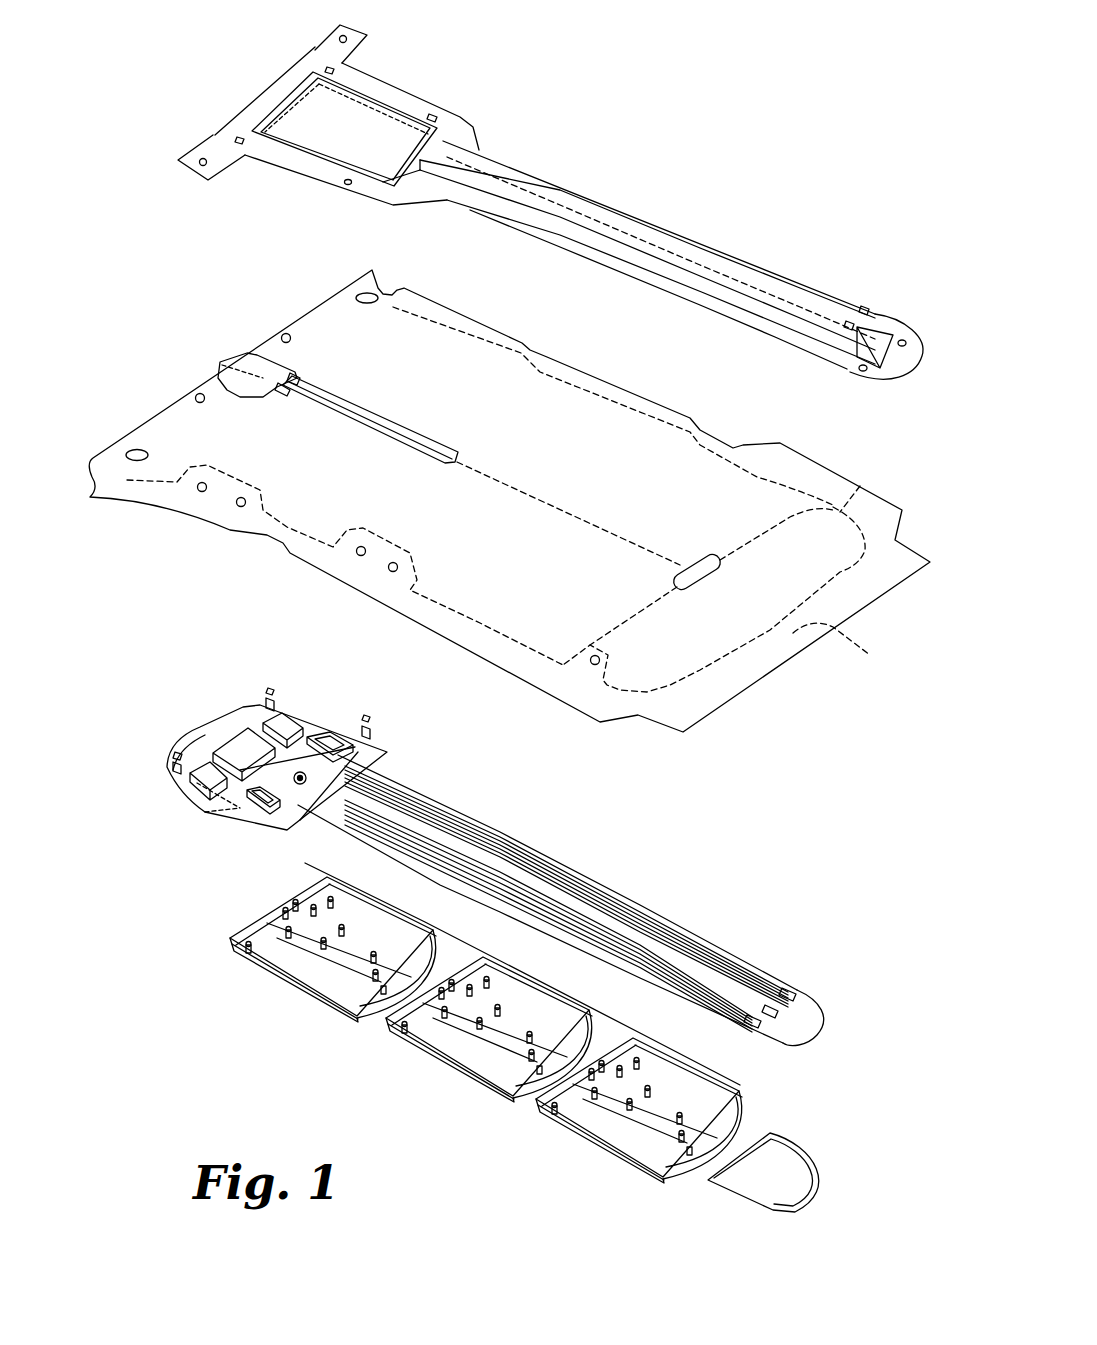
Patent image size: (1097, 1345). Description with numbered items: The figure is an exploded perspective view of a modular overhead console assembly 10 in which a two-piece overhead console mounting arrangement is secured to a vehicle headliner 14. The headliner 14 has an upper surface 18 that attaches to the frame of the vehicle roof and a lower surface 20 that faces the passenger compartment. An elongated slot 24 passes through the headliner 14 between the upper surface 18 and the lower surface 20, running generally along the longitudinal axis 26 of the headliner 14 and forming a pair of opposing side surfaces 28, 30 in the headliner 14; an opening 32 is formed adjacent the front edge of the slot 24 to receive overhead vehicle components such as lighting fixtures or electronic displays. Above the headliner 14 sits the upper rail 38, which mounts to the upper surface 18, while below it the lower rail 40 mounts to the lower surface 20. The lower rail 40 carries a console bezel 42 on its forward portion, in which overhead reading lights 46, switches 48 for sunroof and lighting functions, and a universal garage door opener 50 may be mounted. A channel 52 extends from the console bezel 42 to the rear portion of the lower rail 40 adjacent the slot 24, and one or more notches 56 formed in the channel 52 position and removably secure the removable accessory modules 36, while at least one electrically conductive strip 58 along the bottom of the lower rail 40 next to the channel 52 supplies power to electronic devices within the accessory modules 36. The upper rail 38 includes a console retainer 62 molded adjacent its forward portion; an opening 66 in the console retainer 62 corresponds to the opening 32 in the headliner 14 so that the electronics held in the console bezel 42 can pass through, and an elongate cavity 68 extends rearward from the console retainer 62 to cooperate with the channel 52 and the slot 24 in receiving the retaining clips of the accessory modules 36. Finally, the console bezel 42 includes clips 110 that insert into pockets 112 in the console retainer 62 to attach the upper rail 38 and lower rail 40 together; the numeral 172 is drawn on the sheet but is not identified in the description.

The modular overhead console assembly 10 is at (812, 126).
The headliner 14 is at (631, 386).
The upper surface 18 is at (727, 487).
The lower surface 20 is at (661, 740).
The elongated slot 24 is at (343, 407).
The longitudinal axis 26 is at (843, 637).
The side surface 28 is at (300, 372).
The side surface 30 is at (280, 393).
The opening 32 is at (223, 368).
The accessory module 36 is at (291, 993).
The upper rail 38 is at (279, 71).
The lower rail 40 is at (745, 950).
The console bezel 42 is at (178, 755).
The overhead reading light 46 is at (340, 733).
The switch 48 is at (293, 708).
The universal garage door opener 50 is at (227, 732).
The channel 52 is at (783, 1016).
The notch 56 is at (471, 845).
The electrically conductive strip 58 is at (623, 903).
The console retainer 62 is at (240, 118).
The opening 66 is at (373, 95).
The elongate cavity 68 is at (467, 172).
The clip 110 is at (270, 690).
The pocket 112 is at (347, 185).
The retainer clip 172 is at (433, 112).